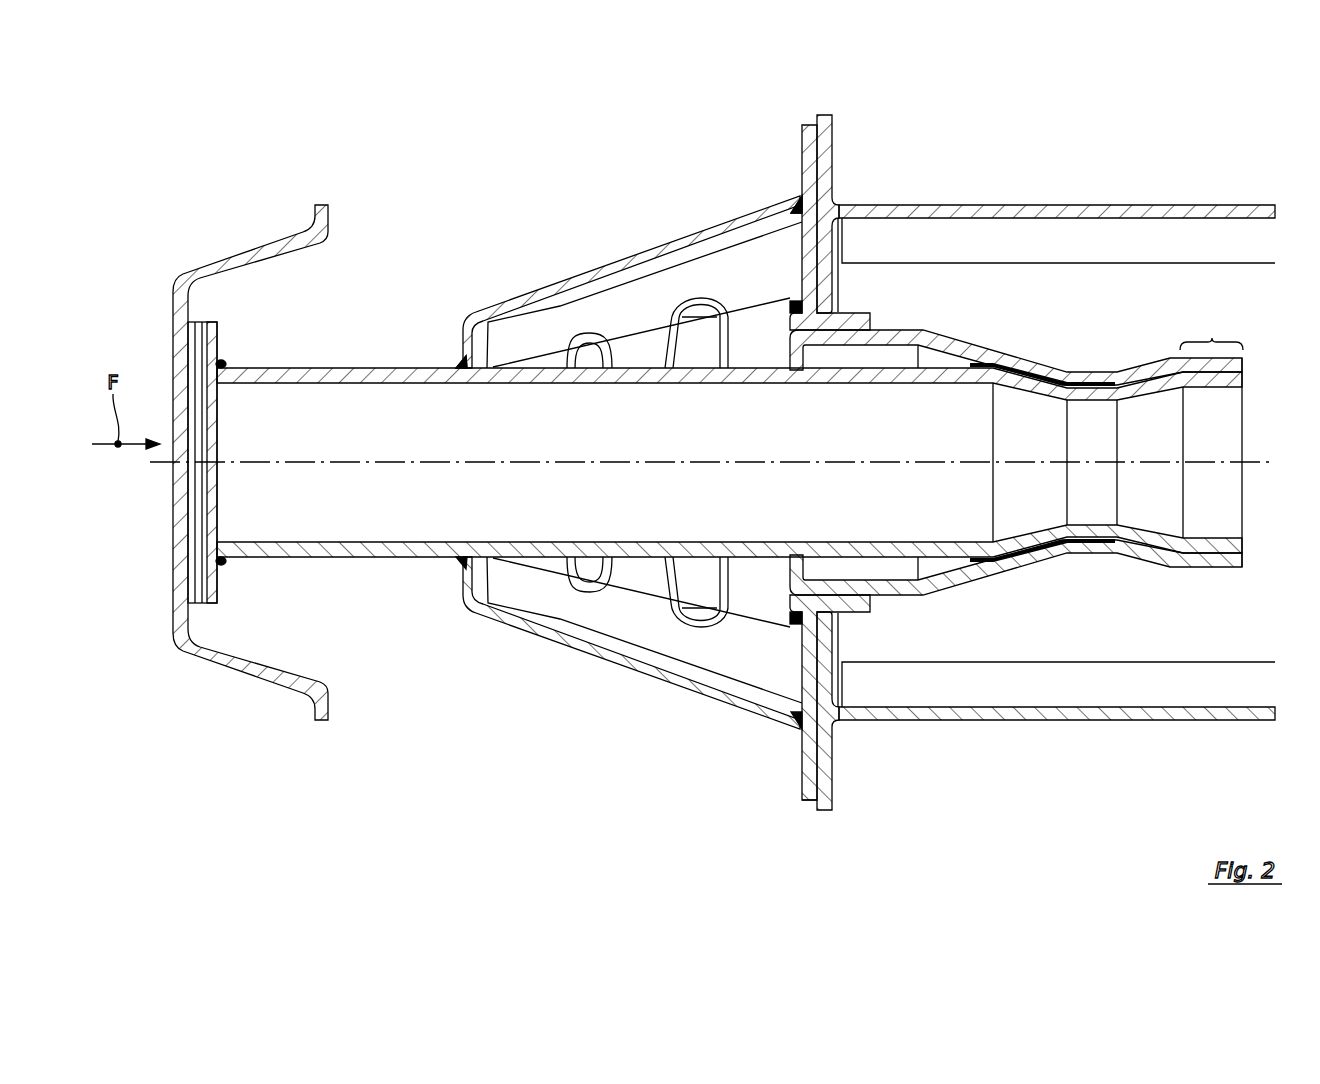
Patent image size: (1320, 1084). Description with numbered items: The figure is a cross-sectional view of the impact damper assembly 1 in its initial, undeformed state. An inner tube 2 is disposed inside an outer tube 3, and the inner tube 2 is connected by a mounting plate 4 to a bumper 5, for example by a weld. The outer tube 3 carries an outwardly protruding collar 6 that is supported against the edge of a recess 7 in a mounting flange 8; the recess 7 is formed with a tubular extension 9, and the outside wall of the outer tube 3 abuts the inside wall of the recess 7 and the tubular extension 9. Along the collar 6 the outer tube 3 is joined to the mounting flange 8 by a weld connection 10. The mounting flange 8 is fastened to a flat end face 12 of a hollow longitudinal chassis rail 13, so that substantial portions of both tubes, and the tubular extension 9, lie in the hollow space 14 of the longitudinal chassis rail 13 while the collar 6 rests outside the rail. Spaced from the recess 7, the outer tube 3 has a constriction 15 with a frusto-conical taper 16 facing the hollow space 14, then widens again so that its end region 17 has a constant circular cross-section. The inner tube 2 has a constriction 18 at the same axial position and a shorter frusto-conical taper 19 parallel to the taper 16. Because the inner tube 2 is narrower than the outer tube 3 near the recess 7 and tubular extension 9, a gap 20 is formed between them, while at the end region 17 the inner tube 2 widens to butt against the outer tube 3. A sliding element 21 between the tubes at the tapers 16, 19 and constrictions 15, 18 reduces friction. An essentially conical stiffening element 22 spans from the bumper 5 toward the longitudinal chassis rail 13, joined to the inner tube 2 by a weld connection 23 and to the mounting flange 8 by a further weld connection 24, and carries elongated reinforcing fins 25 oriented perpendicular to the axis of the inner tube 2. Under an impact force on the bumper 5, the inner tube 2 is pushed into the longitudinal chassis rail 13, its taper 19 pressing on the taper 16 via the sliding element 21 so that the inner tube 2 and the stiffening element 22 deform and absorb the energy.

The impact damper assembly 1 is at (545, 755).
The inner tube 2 is at (412, 552).
The outer tube 3 is at (908, 588).
The mounting plate 4 is at (197, 578).
The bumper 5 is at (260, 675).
The collar 6 is at (776, 350).
The recess 7 is at (790, 322).
The mounting flange 8 is at (826, 157).
The tubular extension 9 is at (853, 316).
The weld connection 10 is at (850, 312).
The flat end face 12 is at (792, 788).
The longitudinal chassis rail 13 is at (981, 210).
The hollow space 14 is at (1143, 293).
The constriction 15 is at (1090, 561).
The frusto-conical taper 16 is at (970, 576).
The region 17 is at (1212, 338).
The constriction 18 is at (1099, 504).
The frusto-conical taper 19 is at (1028, 389).
The gap 20 is at (877, 566).
The sliding element 21 is at (1023, 558).
The conical stiffening element 22 is at (521, 303).
The weld connection 23 is at (461, 364).
The weld connection 24 is at (790, 198).
The reinforcing fins 25 is at (590, 576).